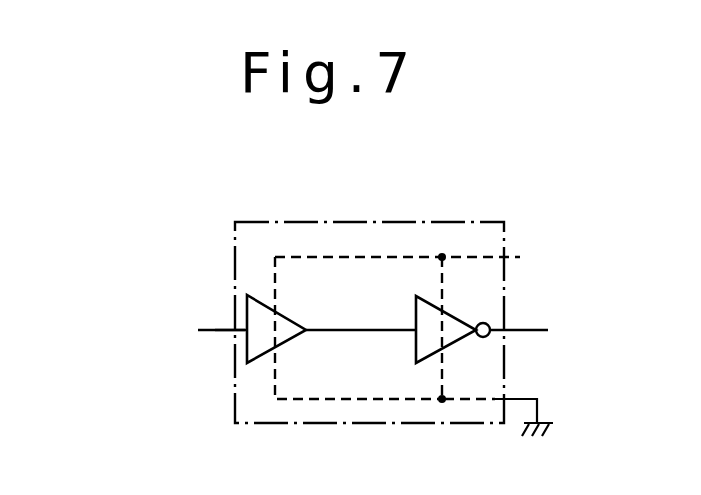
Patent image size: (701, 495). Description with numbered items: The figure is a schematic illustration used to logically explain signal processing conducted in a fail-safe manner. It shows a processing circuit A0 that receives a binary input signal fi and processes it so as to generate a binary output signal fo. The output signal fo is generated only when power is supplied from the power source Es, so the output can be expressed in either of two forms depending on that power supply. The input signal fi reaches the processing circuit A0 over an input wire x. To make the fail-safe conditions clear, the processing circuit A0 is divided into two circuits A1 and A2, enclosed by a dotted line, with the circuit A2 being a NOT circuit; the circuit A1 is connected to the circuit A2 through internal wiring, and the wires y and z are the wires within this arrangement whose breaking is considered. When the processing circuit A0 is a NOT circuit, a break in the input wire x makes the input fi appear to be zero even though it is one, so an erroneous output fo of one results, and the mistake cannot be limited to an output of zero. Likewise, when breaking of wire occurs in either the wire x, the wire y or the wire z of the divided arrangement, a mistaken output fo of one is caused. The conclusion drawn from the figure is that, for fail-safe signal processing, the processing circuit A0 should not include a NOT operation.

The processing circuit A0 is at (368, 222).
The power source Es is at (540, 246).
The binary input signal fi is at (180, 318).
The binary output signal fo is at (541, 330).
The input wire x is at (226, 329).
The wire y is at (287, 316).
The wire z is at (373, 331).
The circuit A1 is at (276, 329).
The circuit A2 is at (453, 329).